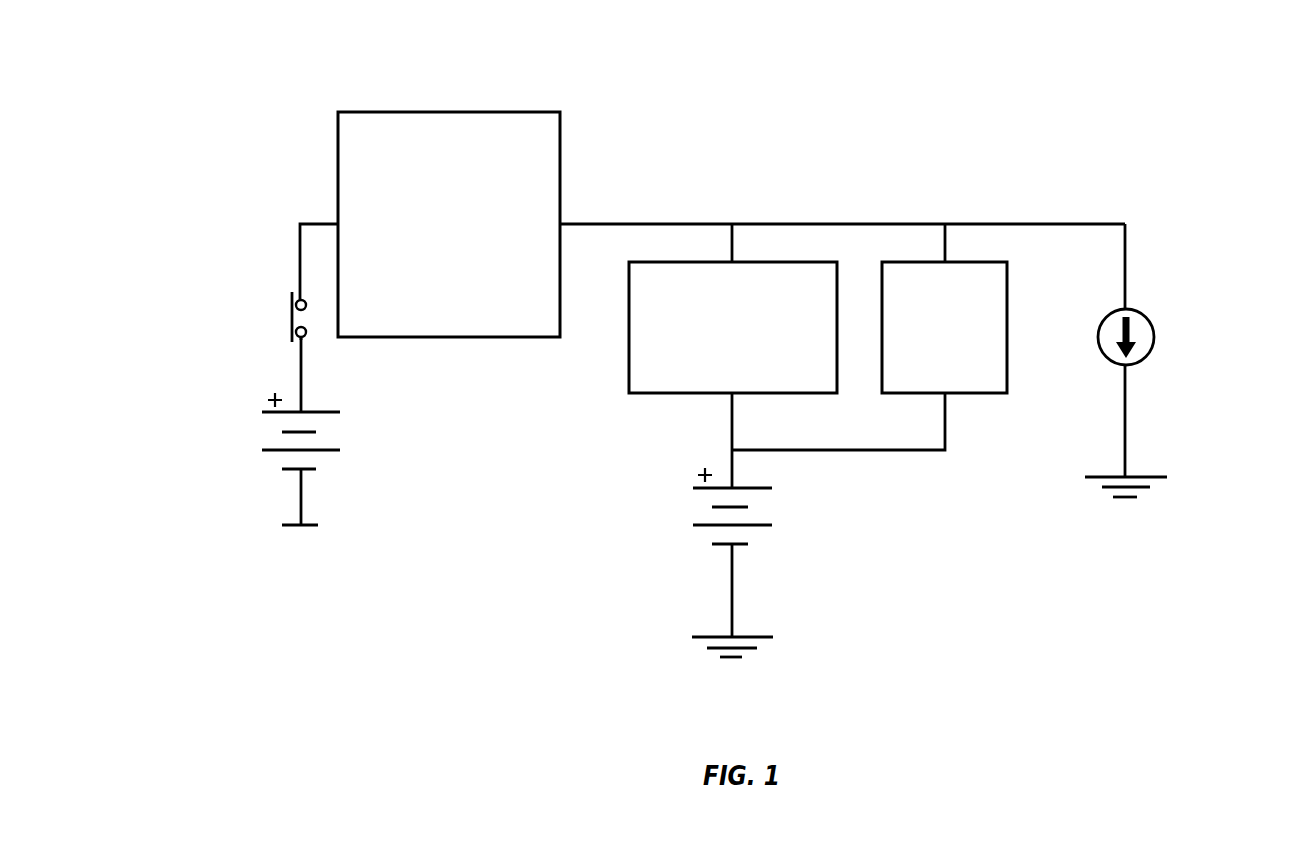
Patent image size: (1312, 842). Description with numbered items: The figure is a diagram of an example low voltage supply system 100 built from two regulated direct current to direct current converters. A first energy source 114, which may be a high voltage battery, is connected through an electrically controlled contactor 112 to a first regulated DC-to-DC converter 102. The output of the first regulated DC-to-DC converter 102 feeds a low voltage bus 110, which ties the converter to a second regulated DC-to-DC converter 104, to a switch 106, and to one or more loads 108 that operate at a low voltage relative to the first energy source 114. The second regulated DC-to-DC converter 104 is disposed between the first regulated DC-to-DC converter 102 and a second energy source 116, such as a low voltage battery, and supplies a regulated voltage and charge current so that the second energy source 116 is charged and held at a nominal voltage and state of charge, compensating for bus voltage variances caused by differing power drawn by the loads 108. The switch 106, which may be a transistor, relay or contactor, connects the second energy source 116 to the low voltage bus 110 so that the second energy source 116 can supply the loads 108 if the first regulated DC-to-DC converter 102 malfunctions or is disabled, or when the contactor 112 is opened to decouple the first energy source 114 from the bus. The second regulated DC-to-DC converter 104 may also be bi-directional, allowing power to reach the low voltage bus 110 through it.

The low voltage supply system 100 is at (1158, 72).
The first regulated DC-to-DC converter 102 is at (430, 281).
The second regulated DC-to-DC converter 104 is at (713, 384).
The switch 106 is at (926, 356).
The loads 108 is at (1154, 337).
The low voltage bus 110 is at (1007, 223).
The contactor 112 is at (252, 308).
The first energy source 114 is at (220, 450).
The second energy source 116 is at (650, 525).